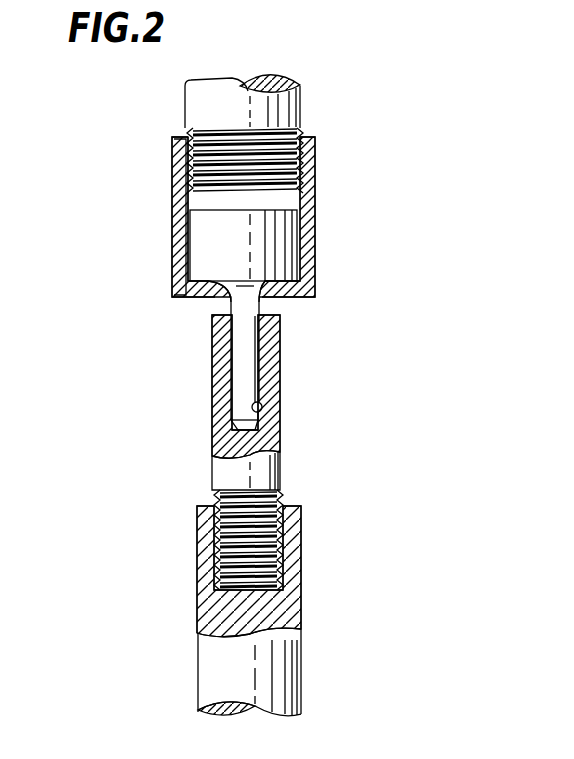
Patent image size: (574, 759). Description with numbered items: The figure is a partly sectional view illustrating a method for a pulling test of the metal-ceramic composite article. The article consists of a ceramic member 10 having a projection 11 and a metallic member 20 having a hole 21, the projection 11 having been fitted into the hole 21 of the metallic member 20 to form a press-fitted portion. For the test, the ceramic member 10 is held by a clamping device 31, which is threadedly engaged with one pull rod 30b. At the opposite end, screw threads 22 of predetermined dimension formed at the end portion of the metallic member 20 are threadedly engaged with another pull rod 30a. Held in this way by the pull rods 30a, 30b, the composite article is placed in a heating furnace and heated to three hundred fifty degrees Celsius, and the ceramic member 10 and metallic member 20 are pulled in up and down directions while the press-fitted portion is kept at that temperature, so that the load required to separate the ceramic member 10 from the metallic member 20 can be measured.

The ceramic member 10 is at (287, 258).
The projection 11 is at (255, 364).
The metallic member 20 is at (283, 475).
The hole 21 is at (258, 404).
The screw threads 22 is at (300, 540).
The pull rod 30a is at (210, 663).
The pull rod 30b is at (301, 112).
The clamping device 31 is at (186, 256).